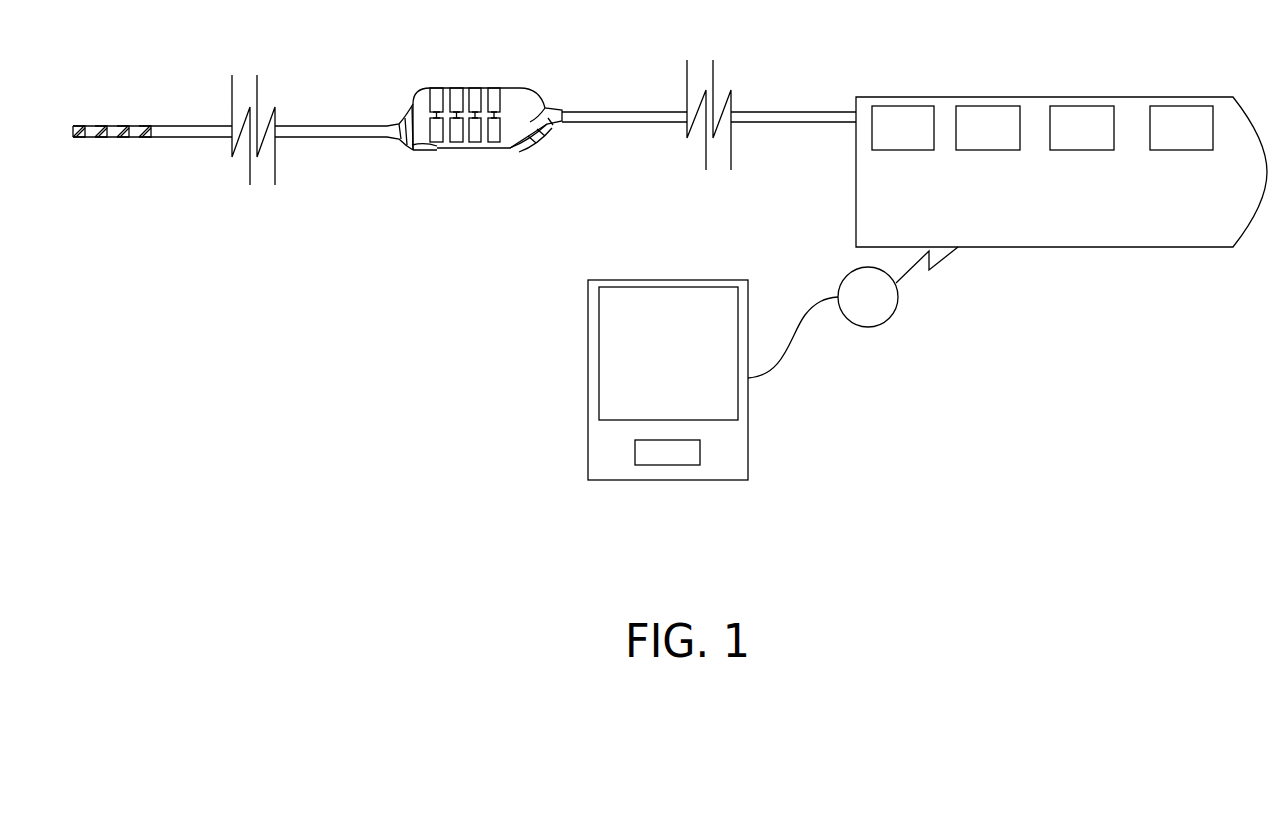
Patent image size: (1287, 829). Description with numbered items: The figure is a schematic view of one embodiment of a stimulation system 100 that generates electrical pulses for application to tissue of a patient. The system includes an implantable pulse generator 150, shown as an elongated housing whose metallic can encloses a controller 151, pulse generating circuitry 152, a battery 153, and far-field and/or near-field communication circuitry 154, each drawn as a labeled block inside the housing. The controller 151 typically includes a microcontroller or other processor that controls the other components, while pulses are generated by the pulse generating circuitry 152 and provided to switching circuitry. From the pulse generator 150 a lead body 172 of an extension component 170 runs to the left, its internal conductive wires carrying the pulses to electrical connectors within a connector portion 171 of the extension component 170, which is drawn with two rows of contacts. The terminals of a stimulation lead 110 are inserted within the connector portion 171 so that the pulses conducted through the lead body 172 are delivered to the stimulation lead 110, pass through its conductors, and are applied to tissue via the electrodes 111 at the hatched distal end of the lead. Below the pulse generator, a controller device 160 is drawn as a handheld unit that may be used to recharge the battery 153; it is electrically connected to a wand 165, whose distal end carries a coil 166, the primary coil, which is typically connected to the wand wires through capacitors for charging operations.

The stimulation system 100 is at (387, 368).
The stimulation lead 110 is at (182, 139).
The electrodes 111 is at (125, 140).
The implantable pulse generator 150 is at (1082, 247).
The controller 151 is at (927, 139).
The pulse generating circuitry 152 is at (1012, 139).
The battery 153 is at (1106, 139).
The communication circuitry 154 is at (1205, 139).
The controller device 160 is at (704, 280).
The wand 165 is at (807, 312).
The coil 166 is at (866, 328).
The extension component 170 is at (556, 90).
The connector portion 171 is at (475, 88).
The lead body 172 is at (608, 124).